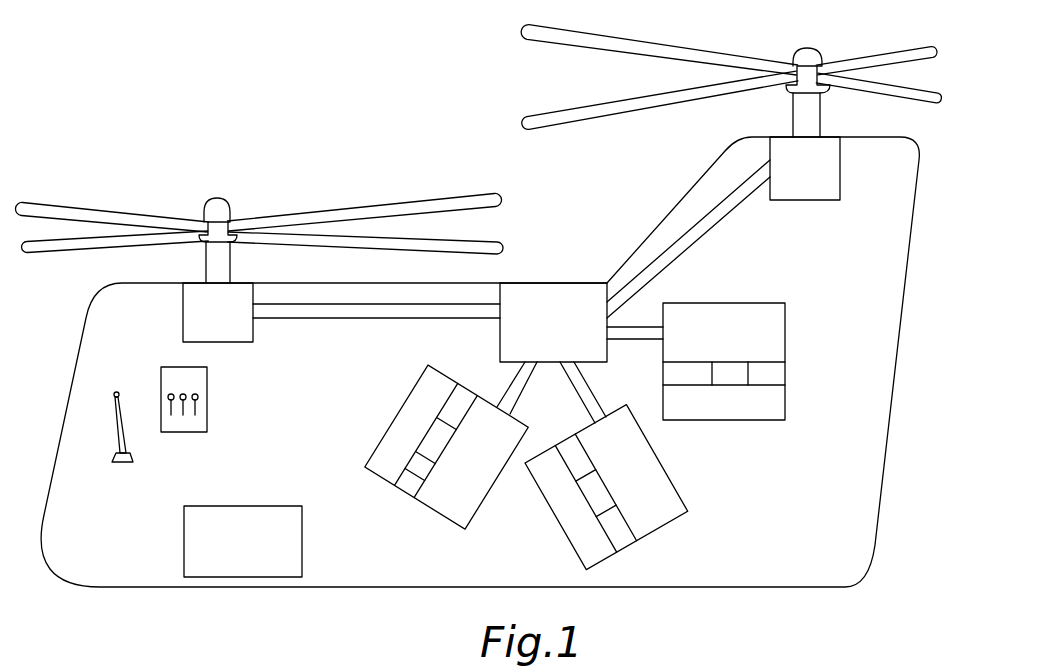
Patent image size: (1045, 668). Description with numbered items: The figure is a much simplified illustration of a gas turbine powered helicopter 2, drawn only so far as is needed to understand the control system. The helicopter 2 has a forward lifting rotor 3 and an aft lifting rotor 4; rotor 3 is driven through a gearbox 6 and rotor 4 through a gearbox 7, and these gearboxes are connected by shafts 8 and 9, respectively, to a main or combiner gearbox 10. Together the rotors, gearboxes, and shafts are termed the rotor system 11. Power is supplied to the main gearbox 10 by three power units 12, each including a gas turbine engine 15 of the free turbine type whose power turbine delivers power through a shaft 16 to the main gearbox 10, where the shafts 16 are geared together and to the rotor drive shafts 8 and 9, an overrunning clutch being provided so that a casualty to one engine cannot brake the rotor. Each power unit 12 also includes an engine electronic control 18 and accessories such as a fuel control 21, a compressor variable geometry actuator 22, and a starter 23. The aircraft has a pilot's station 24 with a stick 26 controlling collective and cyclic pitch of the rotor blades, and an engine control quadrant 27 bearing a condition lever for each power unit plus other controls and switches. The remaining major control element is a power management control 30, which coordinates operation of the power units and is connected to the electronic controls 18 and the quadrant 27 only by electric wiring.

The helicopter 2 is at (88, 317).
The forward lifting rotor 3 is at (250, 229).
The aft lifting rotor 4 is at (672, 53).
The gearbox 6 is at (186, 315).
The gearbox 7 is at (832, 168).
The shaft 8 is at (383, 320).
The shaft 9 is at (687, 242).
The main or combiner gearbox 10 is at (575, 284).
The rotor system 11 is at (493, 136).
The power unit 12 is at (790, 364).
The gas turbine engine 15 is at (740, 315).
The shaft 16 is at (654, 339).
The engine electronic control 18 is at (717, 415).
The fuel control 21 is at (465, 393).
The compressor variable geometry actuator 22 is at (408, 473).
The starter 23 is at (417, 490).
The pilot's station 24 is at (185, 457).
The stick 26 is at (113, 430).
The engine control quadrant 27 is at (207, 375).
The power management control 30 is at (184, 525).